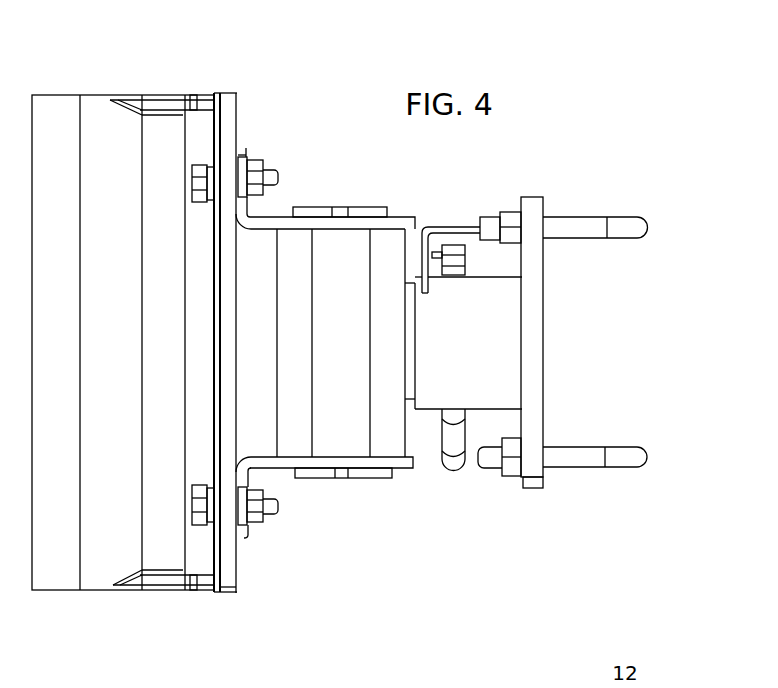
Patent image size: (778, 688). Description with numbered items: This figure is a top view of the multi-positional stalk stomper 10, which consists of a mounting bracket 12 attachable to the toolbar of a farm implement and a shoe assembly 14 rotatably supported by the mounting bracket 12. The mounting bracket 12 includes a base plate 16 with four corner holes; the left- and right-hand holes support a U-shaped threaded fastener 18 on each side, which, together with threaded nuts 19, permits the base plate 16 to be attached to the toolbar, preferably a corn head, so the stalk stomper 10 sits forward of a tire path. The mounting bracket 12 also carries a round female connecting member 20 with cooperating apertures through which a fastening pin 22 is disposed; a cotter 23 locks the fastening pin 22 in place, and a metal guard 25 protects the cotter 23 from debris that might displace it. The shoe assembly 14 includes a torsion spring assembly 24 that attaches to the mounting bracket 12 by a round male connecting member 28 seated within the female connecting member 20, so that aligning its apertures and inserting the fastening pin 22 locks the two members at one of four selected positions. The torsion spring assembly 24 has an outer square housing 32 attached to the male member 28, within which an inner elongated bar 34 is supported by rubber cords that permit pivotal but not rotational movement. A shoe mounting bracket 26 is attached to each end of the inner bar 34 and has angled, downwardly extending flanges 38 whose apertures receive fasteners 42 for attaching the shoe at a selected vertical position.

The multi-positional stalk stomper 10 is at (396, 364).
The mounting bracket 12 is at (559, 342).
The shoe assembly 14 is at (160, 93).
The base plate 16 is at (543, 480).
The U-shaped threaded fastener 18 is at (587, 215).
The threaded nut 19 is at (507, 472).
The female connecting member 20 is at (505, 378).
The fastening pin 22 is at (452, 468).
The cotter 23 is at (450, 259).
The torsion spring assembly 24 is at (368, 480).
The metal guard 25 is at (460, 225).
The shoe mounting bracket 26 is at (281, 467).
The male connecting member 28 is at (407, 400).
The outer square housing 32 is at (405, 243).
The inner elongated bar 34 is at (333, 207).
The downwardly extending flange 38 is at (240, 152).
The fastener 42 is at (193, 178).